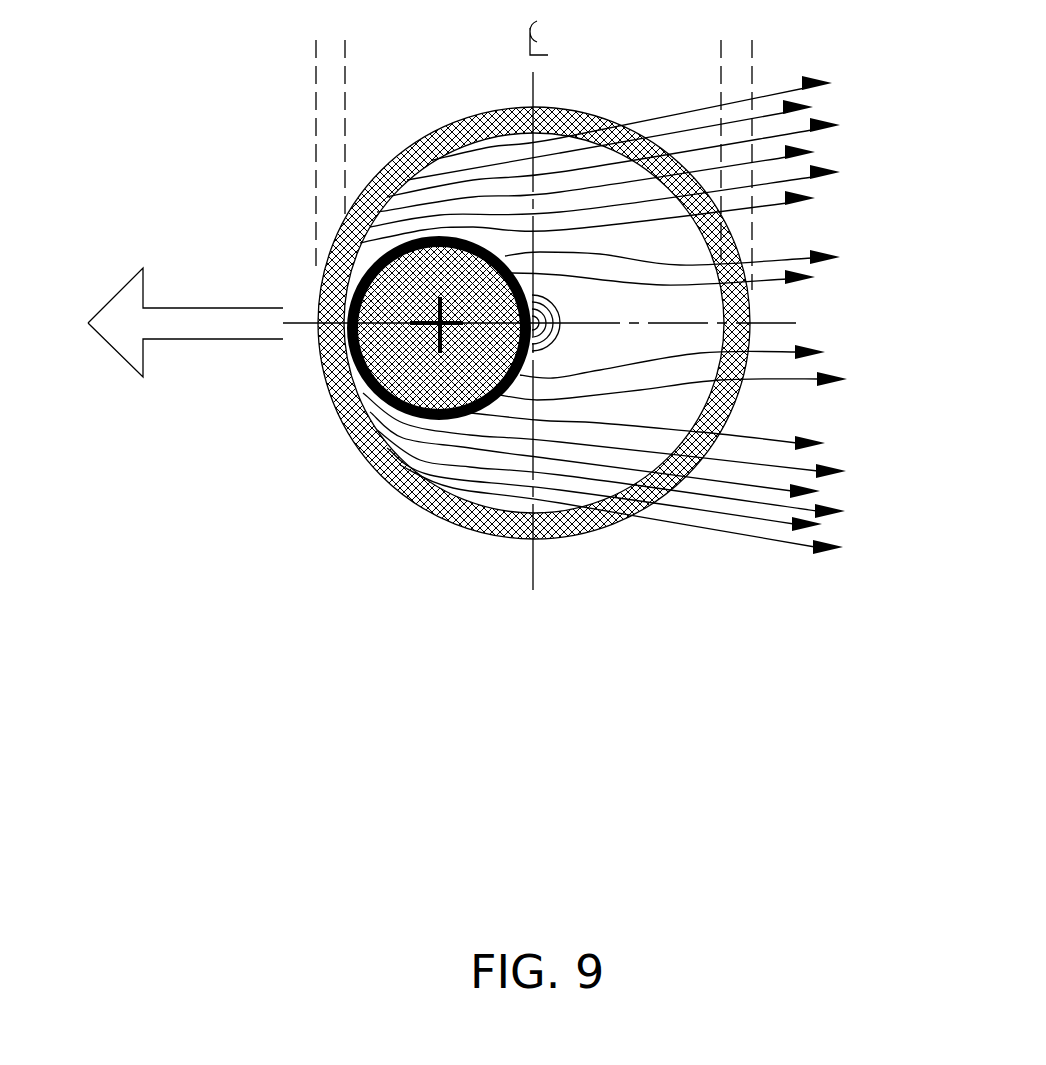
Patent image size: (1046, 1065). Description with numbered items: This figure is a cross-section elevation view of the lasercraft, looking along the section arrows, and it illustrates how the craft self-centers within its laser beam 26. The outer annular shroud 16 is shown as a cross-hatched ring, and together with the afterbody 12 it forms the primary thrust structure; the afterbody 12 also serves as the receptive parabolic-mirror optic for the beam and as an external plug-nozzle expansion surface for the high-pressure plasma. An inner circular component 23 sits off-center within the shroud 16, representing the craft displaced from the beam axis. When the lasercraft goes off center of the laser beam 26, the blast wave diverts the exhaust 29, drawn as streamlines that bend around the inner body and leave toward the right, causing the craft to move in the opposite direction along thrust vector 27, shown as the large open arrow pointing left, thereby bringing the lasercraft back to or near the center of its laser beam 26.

The afterbody 12 is at (556, 302).
The annular shroud 16 is at (390, 490).
The inner cylinder 23 is at (335, 396).
The laser beam 26 is at (393, 247).
The thrust vector 27 is at (121, 283).
The exhaust 29 is at (768, 378).